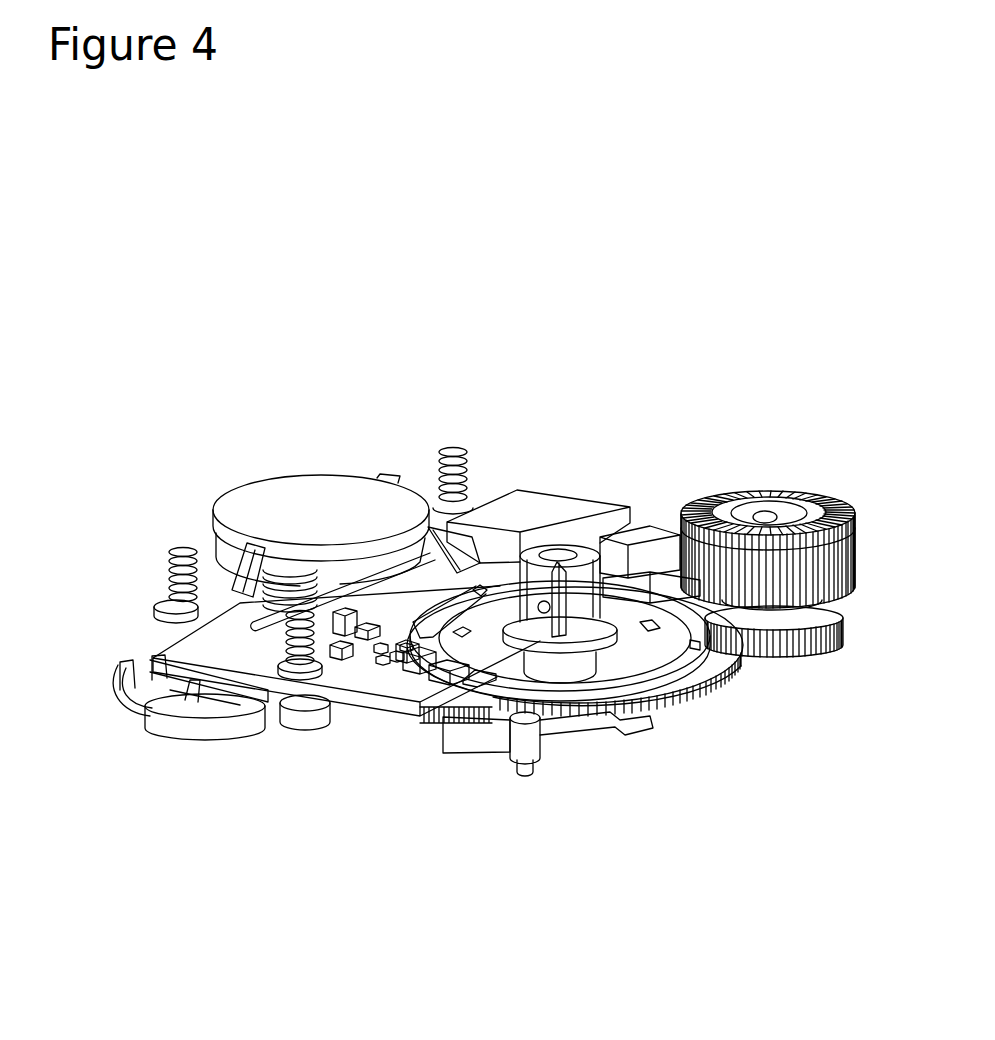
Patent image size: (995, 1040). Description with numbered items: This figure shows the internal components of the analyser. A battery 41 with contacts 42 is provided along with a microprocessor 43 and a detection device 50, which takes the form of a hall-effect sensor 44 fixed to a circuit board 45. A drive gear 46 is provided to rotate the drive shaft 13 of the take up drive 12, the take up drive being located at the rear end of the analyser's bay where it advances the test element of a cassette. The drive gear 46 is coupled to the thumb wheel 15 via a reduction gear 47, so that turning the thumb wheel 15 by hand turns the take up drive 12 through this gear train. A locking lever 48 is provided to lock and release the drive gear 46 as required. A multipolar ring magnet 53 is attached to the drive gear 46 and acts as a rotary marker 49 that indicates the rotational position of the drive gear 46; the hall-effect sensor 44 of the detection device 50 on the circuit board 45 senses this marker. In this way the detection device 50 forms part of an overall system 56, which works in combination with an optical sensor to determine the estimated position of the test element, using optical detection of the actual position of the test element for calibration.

The take up drive 12 is at (559, 597).
The drive shaft 13 is at (560, 556).
The thumb wheel 15 is at (806, 508).
The battery 41 is at (317, 508).
The contacts 42 is at (255, 568).
The microprocessor 43 is at (537, 517).
The hall-effect sensor 44 is at (617, 550).
The circuit board 45 is at (378, 680).
The drive gear 46 is at (667, 717).
The reduction gear 47 is at (822, 644).
The locking lever 48 is at (568, 728).
The rotary marker 49 is at (660, 607).
The detection device 50 is at (627, 597).
The multipolar ring magnet 53 is at (683, 680).
The system 56 is at (470, 828).